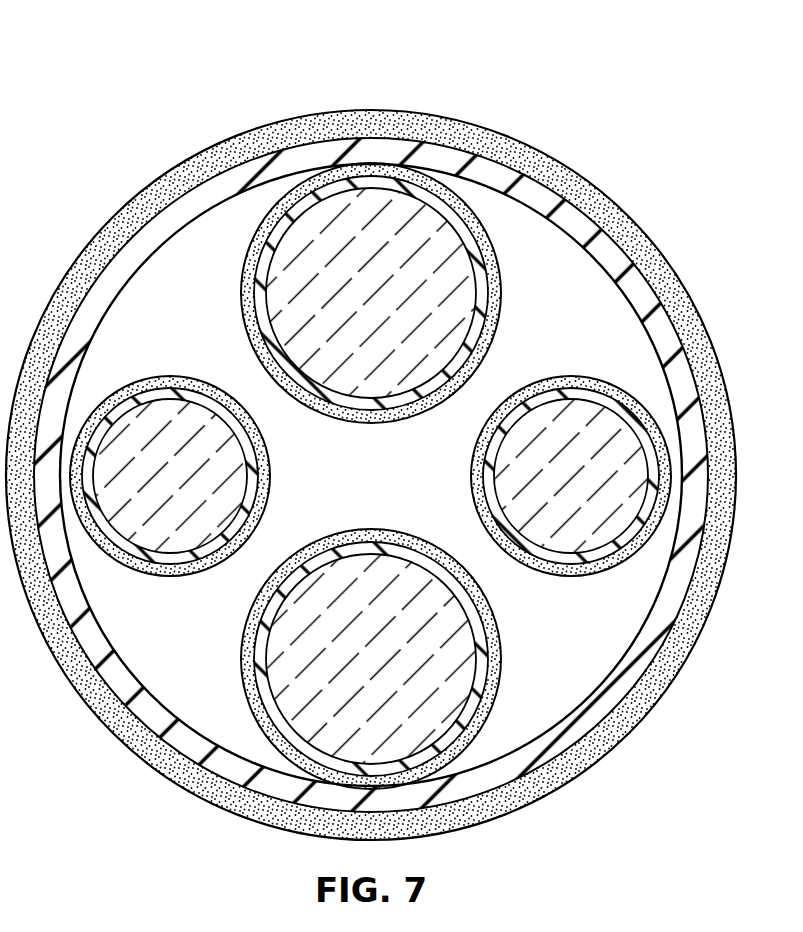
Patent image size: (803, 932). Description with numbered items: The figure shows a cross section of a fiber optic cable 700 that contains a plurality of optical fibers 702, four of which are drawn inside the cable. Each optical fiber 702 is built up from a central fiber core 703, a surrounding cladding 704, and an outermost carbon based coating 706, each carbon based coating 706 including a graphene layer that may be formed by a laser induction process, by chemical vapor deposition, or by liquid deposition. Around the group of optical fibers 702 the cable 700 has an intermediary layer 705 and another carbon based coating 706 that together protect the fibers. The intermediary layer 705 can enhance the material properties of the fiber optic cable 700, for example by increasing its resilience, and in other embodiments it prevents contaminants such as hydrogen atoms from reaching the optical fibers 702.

The fiber optic cable 700 is at (204, 64).
The optical fiber 702 is at (394, 310).
The fiber core 703 is at (171, 400).
The cladding 704 is at (494, 290).
The intermediary layer 705 is at (463, 163).
The carbon based coating 706 is at (326, 112).